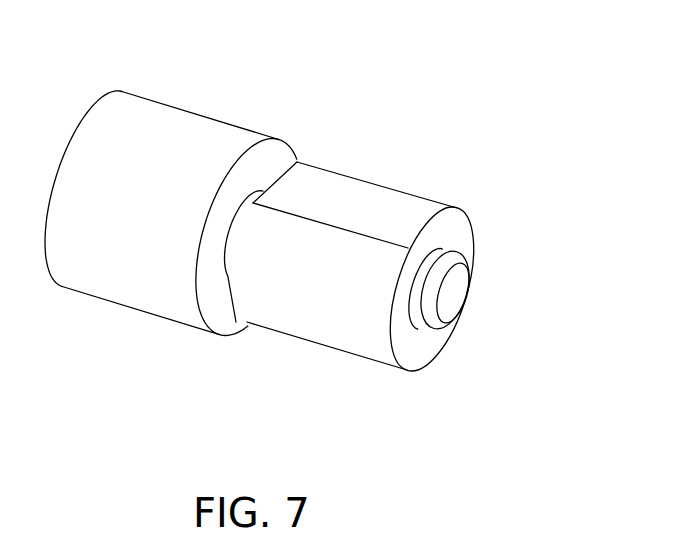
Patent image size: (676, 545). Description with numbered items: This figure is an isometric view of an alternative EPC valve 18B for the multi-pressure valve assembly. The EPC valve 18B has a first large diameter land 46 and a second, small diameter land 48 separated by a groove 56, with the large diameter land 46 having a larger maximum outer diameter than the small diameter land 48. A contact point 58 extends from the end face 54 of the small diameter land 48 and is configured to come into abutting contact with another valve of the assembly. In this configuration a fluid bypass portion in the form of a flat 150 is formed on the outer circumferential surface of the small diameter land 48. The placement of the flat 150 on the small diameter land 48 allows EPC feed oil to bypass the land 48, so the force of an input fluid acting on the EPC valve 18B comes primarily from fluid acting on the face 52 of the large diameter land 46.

The EPC valve 18B is at (203, 51).
The large diameter land 46 is at (108, 266).
The groove 56 is at (289, 131).
The first face 52 is at (213, 313).
The small diameter land 48 is at (320, 348).
The flat 150 is at (372, 200).
The land face 54 is at (422, 350).
The contact point 58 is at (448, 295).